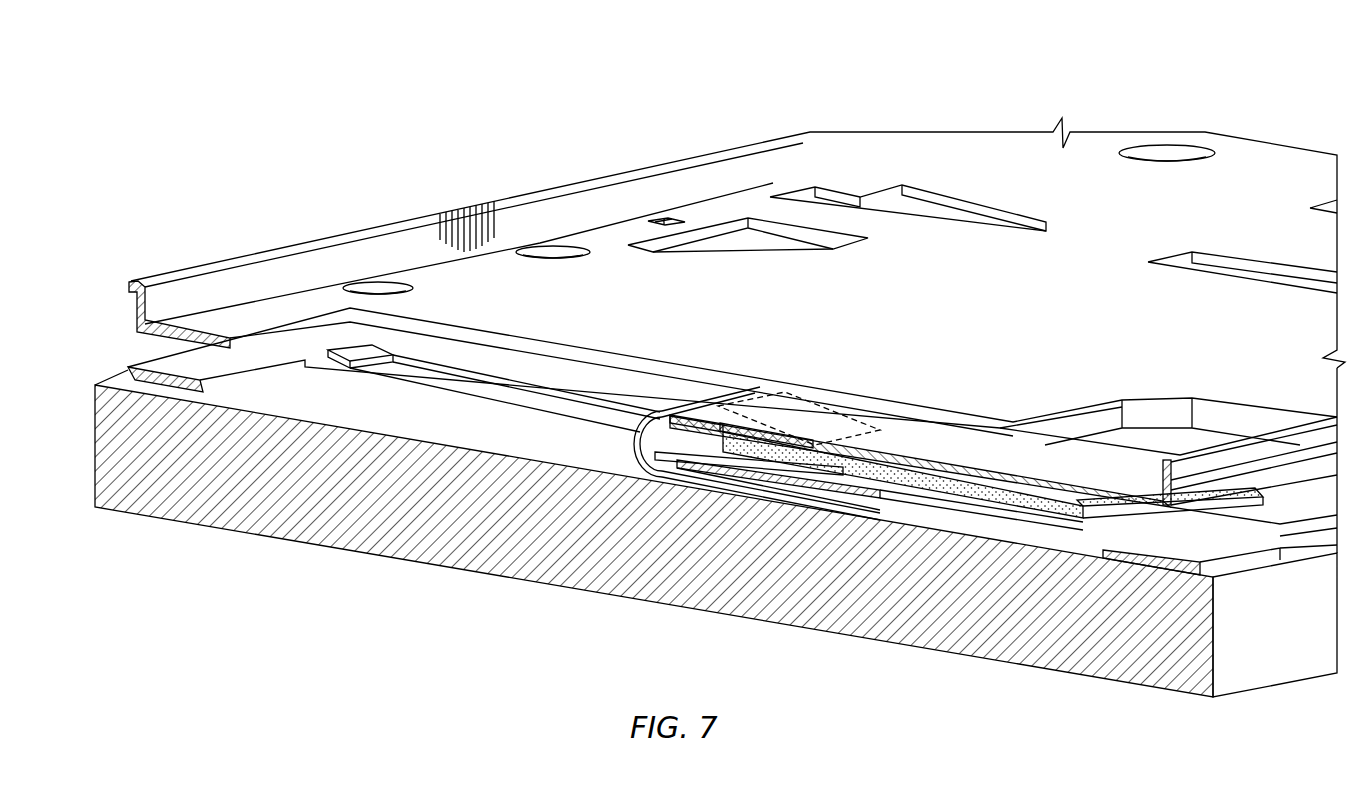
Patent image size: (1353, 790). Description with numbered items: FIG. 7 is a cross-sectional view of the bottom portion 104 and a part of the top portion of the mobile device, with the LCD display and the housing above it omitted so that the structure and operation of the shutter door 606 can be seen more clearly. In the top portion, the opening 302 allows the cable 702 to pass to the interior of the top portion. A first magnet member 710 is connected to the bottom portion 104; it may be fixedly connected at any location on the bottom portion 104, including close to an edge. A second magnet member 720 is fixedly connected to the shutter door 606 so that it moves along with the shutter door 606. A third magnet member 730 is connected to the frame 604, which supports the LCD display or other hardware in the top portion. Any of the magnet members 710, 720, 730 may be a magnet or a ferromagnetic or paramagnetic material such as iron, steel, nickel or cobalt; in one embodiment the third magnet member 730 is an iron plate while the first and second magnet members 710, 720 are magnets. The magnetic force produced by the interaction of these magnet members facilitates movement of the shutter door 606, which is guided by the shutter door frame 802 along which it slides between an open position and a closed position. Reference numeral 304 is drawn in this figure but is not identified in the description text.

The frame 604 is at (770, 176).
The opening 302 is at (386, 420).
The frame 304 is at (186, 370).
The shutter door frame 802 is at (605, 392).
The cable 702 is at (640, 465).
The third magnet member 730 is at (822, 436).
The second magnet member 720 is at (790, 480).
The shutter door 606 is at (960, 506).
The first magnet member 710 is at (1200, 580).
The bottom portion 104 is at (985, 626).